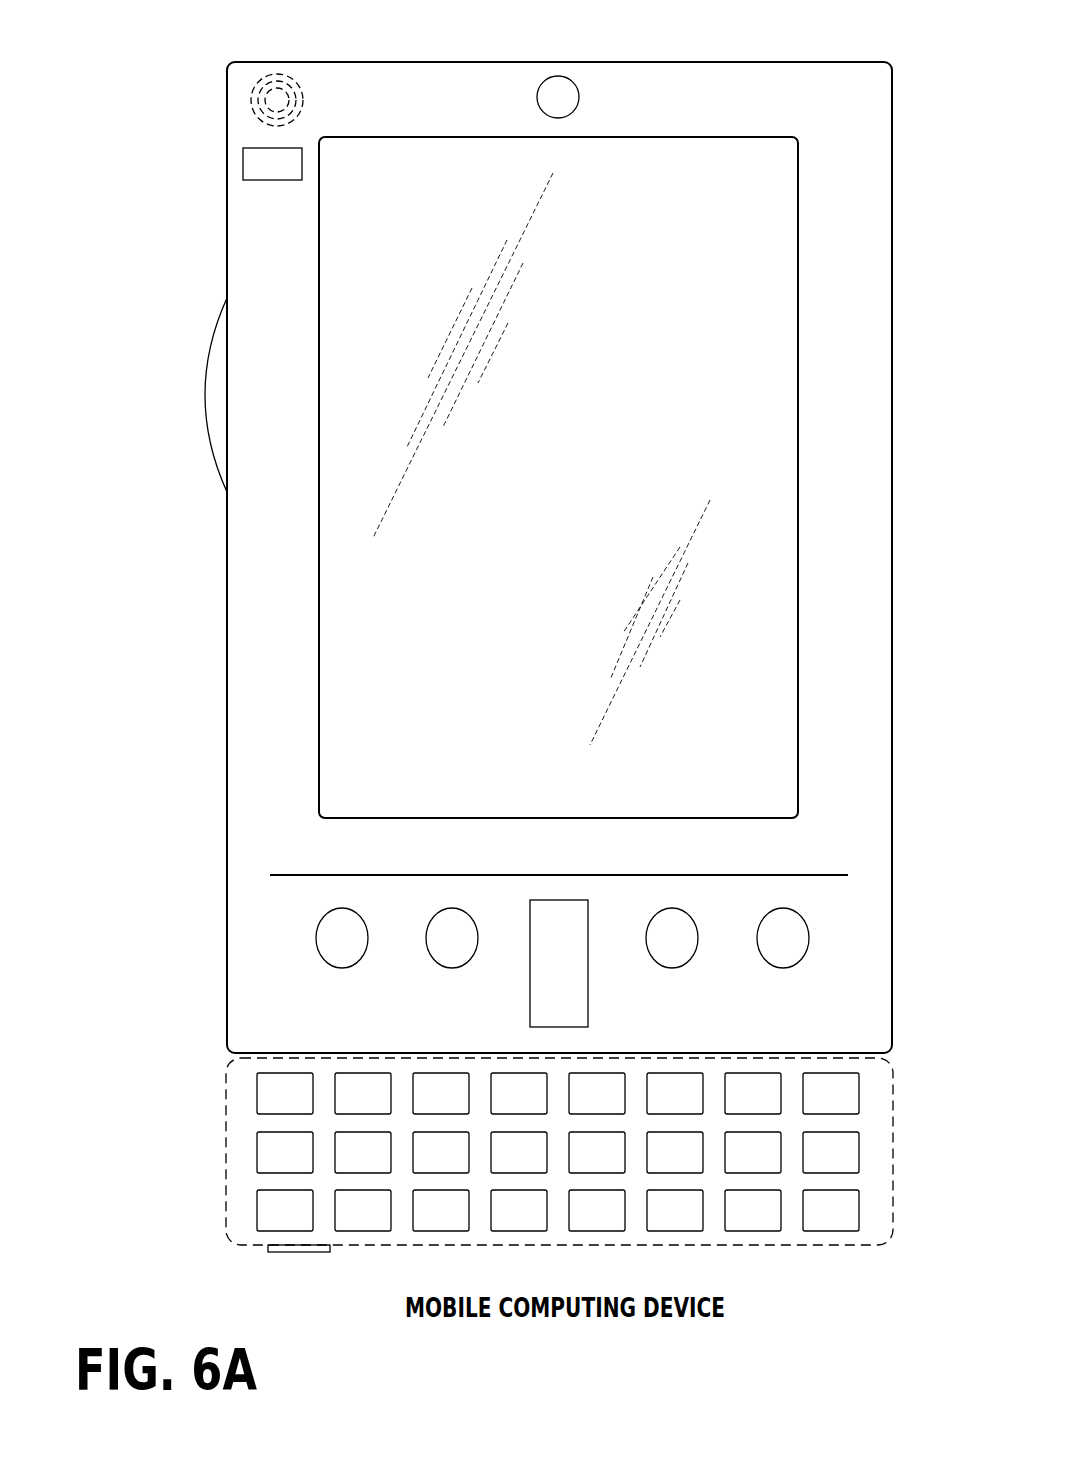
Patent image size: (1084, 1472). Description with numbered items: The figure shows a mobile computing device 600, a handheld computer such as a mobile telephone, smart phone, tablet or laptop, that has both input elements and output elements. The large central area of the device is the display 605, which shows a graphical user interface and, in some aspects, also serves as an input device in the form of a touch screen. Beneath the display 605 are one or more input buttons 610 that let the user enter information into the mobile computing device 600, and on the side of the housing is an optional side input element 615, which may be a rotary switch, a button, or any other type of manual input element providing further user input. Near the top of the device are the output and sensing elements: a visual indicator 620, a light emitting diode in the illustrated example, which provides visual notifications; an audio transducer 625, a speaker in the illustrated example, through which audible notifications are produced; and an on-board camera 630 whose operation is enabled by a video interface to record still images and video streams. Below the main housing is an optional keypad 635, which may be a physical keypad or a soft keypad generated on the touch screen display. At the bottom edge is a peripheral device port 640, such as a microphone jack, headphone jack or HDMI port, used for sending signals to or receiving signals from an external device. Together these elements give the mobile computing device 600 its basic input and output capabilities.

The mobile computing device 600 is at (856, 62).
The display 605 is at (342, 653).
The input buttons 610 is at (342, 968).
The side input element 615 is at (206, 398).
The visual indicator 620 is at (243, 164).
The audio transducer 625 is at (252, 104).
The on-board camera 630 is at (558, 76).
The keypad 635 is at (236, 1152).
The peripheral device port 640 is at (275, 1253).